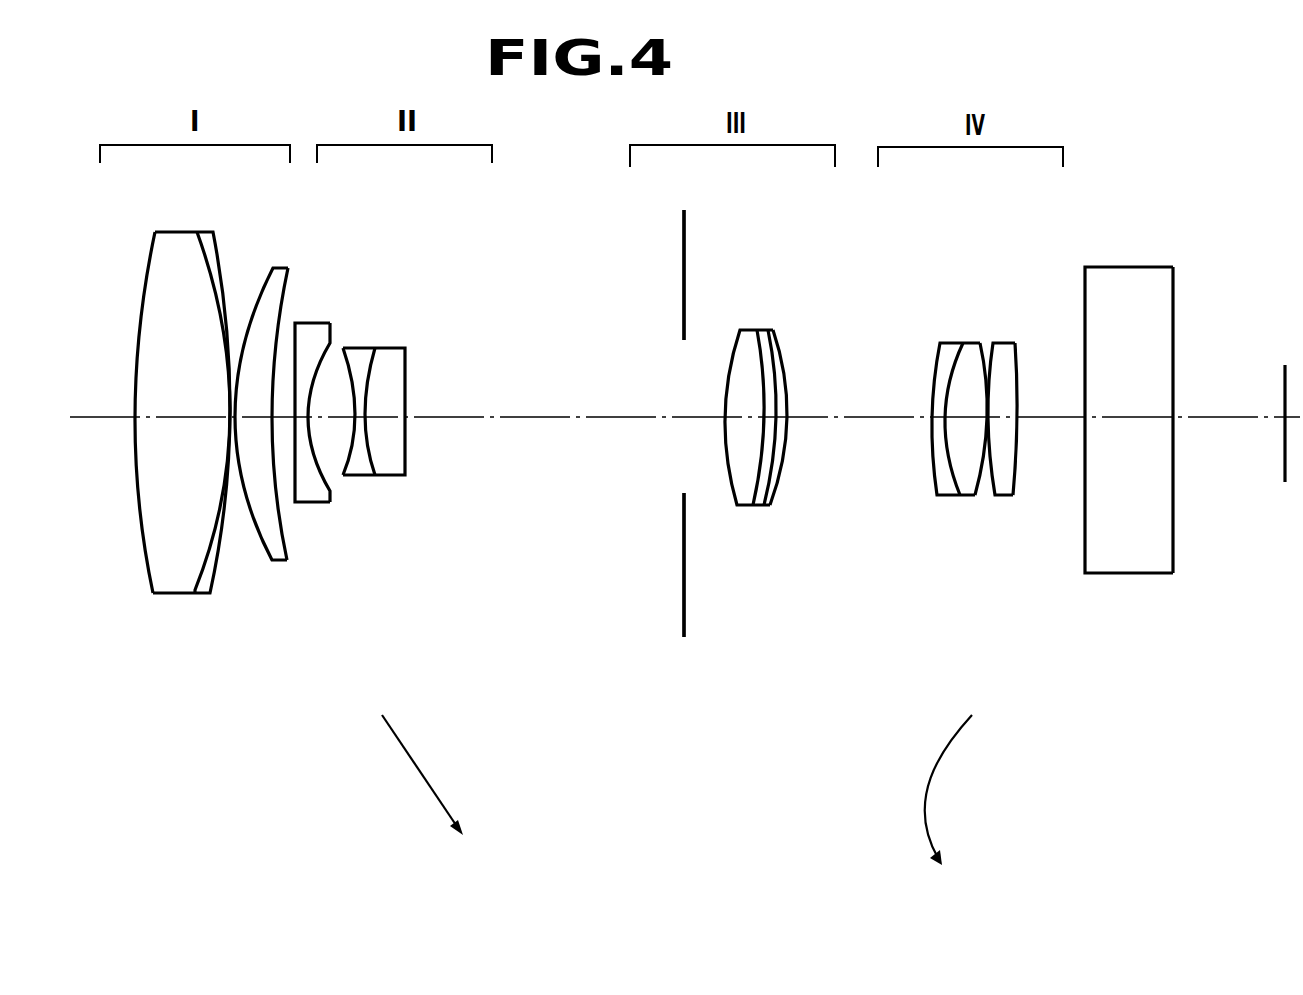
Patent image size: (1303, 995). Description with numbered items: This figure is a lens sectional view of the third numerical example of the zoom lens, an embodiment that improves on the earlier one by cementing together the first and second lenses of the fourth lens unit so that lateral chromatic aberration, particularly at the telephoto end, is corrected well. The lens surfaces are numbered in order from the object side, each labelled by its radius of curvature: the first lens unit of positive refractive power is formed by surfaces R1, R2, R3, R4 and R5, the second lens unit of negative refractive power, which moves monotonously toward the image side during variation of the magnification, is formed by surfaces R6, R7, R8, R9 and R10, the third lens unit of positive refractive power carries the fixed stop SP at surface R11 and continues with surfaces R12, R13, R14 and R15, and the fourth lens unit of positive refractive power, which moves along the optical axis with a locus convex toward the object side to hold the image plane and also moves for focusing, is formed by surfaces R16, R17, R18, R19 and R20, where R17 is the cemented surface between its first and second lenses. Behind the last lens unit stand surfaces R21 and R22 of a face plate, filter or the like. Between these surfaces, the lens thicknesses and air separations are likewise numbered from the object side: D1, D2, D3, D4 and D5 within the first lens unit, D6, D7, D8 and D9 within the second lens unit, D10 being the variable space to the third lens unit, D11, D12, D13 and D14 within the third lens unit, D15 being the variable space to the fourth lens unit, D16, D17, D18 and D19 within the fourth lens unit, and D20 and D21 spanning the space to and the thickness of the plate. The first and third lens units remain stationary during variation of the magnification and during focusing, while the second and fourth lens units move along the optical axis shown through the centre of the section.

The radius of curvature of the first lens surface R1 is at (152, 264).
The radius of curvature of the second lens surface R2 is at (184, 265).
The radius of curvature of the third lens surface R3 is at (222, 245).
The radius of curvature of the fourth lens surface R4 is at (257, 300).
The radius of curvature of the fifth lens surface R5 is at (288, 280).
The radius of curvature of the sixth lens surface R6 is at (296, 323).
The radius of curvature of the seventh lens surface R7 is at (320, 346).
The radius of curvature of the eighth lens surface R8 is at (354, 348).
The radius of curvature of the ninth lens surface R9 is at (386, 348).
The radius of curvature of the tenth lens surface R10 is at (410, 365).
The radius of curvature of the eleventh lens surface R11 is at (684, 248).
The radius of curvature of the twelfth lens surface R12 is at (727, 358).
The radius of curvature of the thirteenth lens surface R13 is at (757, 362).
The radius of curvature of the fourteenth lens surface R14 is at (767, 350).
The radius of curvature of the fifteenth lens surface R15 is at (783, 358).
The radius of curvature of the sixteenth lens surface R16 is at (934, 380).
The radius of curvature of the seventeenth lens surface R17 is at (953, 367).
The radius of curvature of the eighteenth lens surface R18 is at (986, 350).
The radius of curvature of the nineteenth lens surface R19 is at (989, 350).
The radius of curvature of the twentieth lens surface R20 is at (1018, 362).
The radius of curvature of the twenty-first surface R21 is at (1086, 299).
The face plate or filter surface R22 is at (1173, 297).
The stop SP is at (684, 557).
The first lens thickness D1 is at (138, 418).
The second lens thickness D2 is at (187, 418).
The third lens thickness or air separation D3 is at (228, 418).
The fourth lens thickness or air separation D4 is at (248, 418).
The fifth lens thickness or air separation D5 is at (300, 418).
The sixth lens thickness or air separation D6 is at (327, 418).
The seventh lens thickness or air separation D7 is at (357, 418).
The eighth lens thickness or air separation D8 is at (385, 418).
The ninth lens thickness or air separation D9 is at (398, 418).
The tenth air separation D10 is at (485, 418).
The eleventh air separation D11 is at (693, 418).
The twelfth lens thickness D12 is at (740, 418).
The thirteenth lens thickness D13 is at (768, 418).
The fourteenth lens thickness D14 is at (778, 418).
The fifteenth air separation D15 is at (862, 418).
The sixteenth lens thickness D16 is at (935, 418).
The seventeenth lens thickness D17 is at (960, 418).
The eighteenth air separation D18 is at (987, 418).
The nineteenth lens thickness D19 is at (997, 418).
The twentieth air separation D20 is at (1053, 418).
The twenty-first thickness D21 is at (1118, 418).